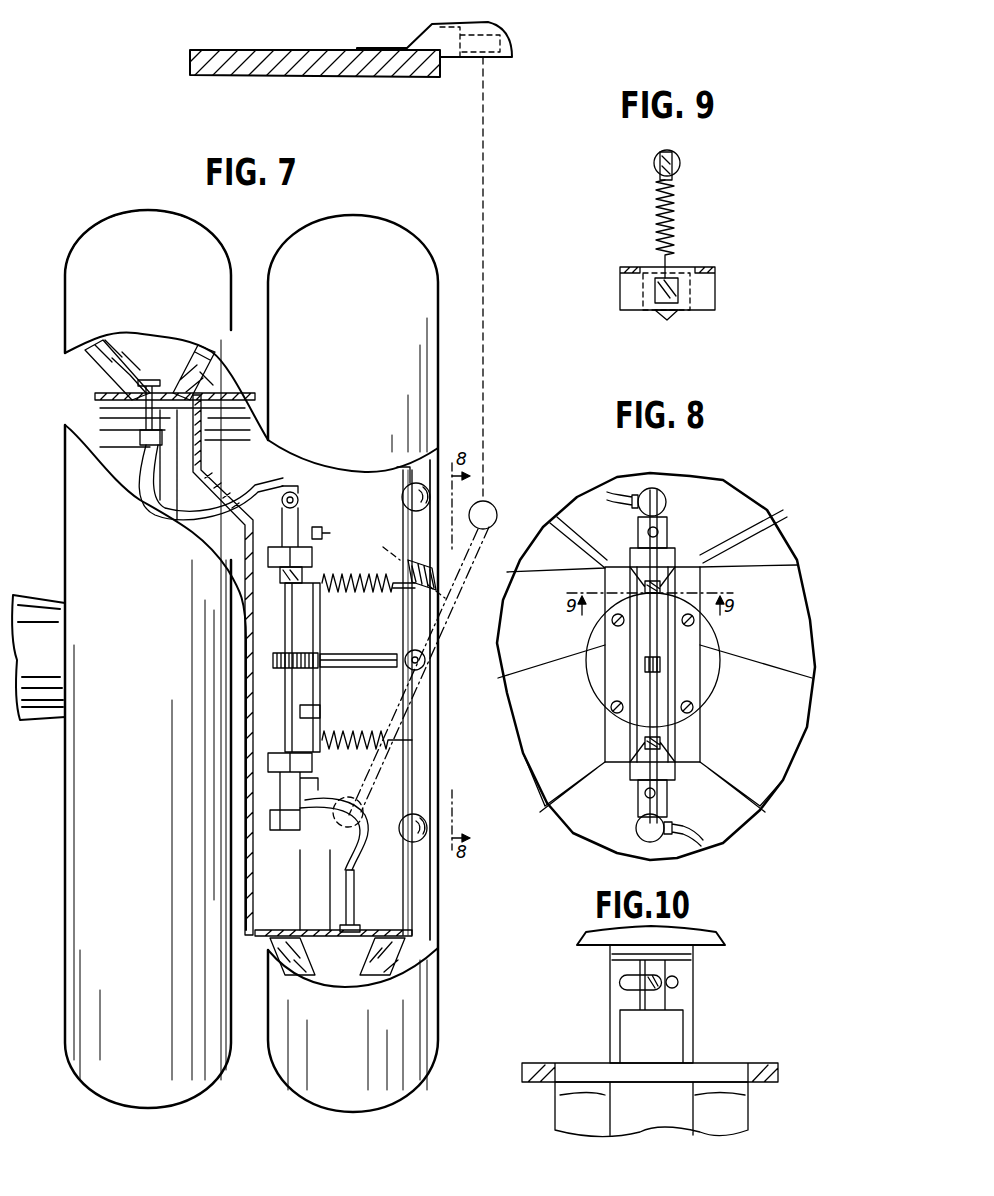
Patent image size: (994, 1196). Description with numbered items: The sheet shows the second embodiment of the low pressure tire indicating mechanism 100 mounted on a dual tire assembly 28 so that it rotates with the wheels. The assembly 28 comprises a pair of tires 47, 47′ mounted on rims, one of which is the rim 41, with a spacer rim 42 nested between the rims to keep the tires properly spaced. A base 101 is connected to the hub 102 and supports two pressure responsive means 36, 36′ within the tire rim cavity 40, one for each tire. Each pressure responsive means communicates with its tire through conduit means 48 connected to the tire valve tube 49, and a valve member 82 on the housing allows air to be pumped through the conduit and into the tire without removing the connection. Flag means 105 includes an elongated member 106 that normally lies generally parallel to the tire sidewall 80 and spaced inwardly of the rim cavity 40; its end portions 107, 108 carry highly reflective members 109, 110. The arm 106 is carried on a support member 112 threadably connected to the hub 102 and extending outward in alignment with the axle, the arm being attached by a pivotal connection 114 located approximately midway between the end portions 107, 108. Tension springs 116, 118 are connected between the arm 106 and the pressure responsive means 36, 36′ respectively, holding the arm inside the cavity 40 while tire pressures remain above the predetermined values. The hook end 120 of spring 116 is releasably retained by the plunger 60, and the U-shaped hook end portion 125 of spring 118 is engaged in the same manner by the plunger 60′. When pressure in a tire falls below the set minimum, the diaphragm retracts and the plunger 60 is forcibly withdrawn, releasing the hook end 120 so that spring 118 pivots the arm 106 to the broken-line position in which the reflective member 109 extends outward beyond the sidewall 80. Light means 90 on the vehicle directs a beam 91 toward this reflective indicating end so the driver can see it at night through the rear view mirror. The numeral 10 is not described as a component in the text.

In FIG. 7, the dual tire assembly 28 is at (95, 232).
In FIG. 7, the tire 47 is at (213, 230).
In FIG. 7, the tire 47′ is at (396, 228).
In FIG. 7, the rim 41 is at (90, 388).
In FIG. 7, the spacer rim 42 is at (228, 395).
In FIG. 7, the tire valve tube 49 is at (150, 384).
In FIG. 7, the conduit means 48 is at (250, 482).
In FIG. 7, the pressure responsive means 36 is at (308, 512).
In FIG. 7, the pressure responsive means 36′ is at (308, 798).
In FIG. 10, the pressure responsive means 36′ is at (690, 1040).
In FIG. 7, the valve member 82 is at (326, 534).
In FIG. 7, the plunger 60 is at (290, 585).
In FIG. 9, the plunger 60 is at (650, 312).
In FIG. 10, the plunger 60′ is at (668, 998).
In FIG. 7, the base 101 is at (320, 634).
In FIG. 8, the base 101 is at (690, 657).
In FIG. 7, the hub 102 is at (318, 682).
In FIG. 8, the hub 102 is at (710, 673).
In FIG. 7, the support member 112 is at (356, 660).
In FIG. 8, the support member 112 is at (648, 664).
In FIG. 7, the pivotal connection 114 is at (425, 660).
In FIG. 7, the tension spring 116 is at (355, 592).
In FIG. 9, the tension spring 116 is at (658, 204).
In FIG. 8, the tension spring 116 is at (670, 585).
In FIG. 7, the tension spring 118 is at (380, 760).
In FIG. 8, the tension spring 118 is at (670, 745).
In FIG. 7, the valve 10 is at (313, 770).
In FIG. 7, the end portion 108 is at (415, 803).
In FIG. 8, the end portion 108 is at (666, 792).
In FIG. 7, the end portion 107 is at (408, 526).
In FIG. 8, the end portion 107 is at (645, 540).
In FIG. 7, the flag means 105 is at (420, 692).
In FIG. 8, the flag means 105 is at (650, 705).
In FIG. 7, the elongated member 106 is at (420, 628).
In FIG. 8, the elongated member 106 is at (650, 635).
In FIG. 7, the highly reflective member 109 is at (404, 495).
In FIG. 9, the highly reflective member 109 is at (676, 155).
In FIG. 8, the highly reflective member 109 is at (665, 504).
In FIG. 7, the highly reflective member 110 is at (405, 834).
In FIG. 8, the highly reflective member 110 is at (640, 832).
In FIG. 7, the low pressure tire indicating mechanism 100 is at (432, 731).
In FIG. 8, the low pressure tire indicating mechanism 100 is at (706, 532).
In FIG. 7, the tire sidewall 80 is at (435, 915).
In FIG. 7, the tire rim cavity 40 is at (420, 878).
In FIG. 7, the light means 90 is at (508, 45).
In FIG. 7, the beam of light 91 is at (486, 185).
In FIG. 9, the hook end 120 is at (676, 170).
In FIG. 10, the hook end portion 125 is at (626, 982).